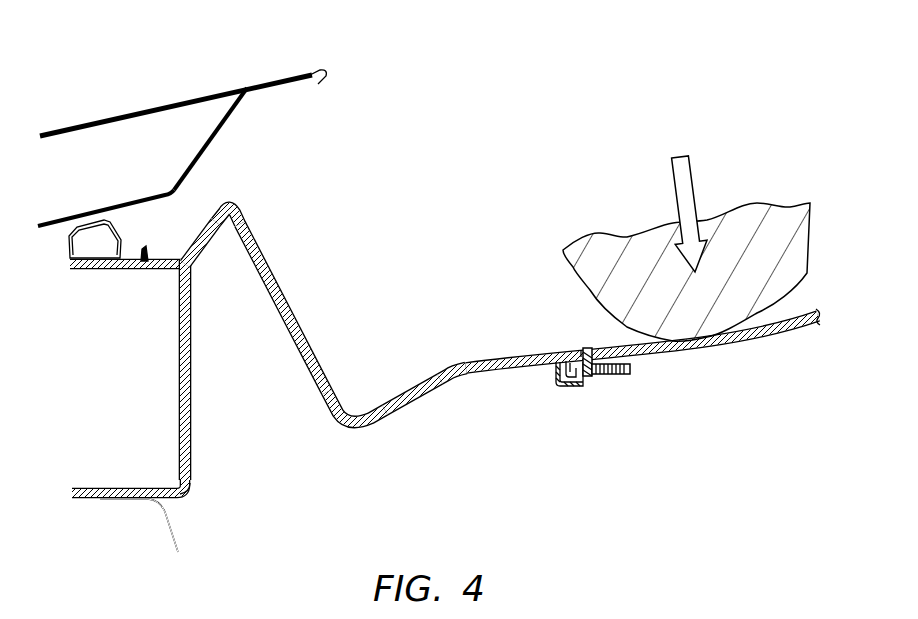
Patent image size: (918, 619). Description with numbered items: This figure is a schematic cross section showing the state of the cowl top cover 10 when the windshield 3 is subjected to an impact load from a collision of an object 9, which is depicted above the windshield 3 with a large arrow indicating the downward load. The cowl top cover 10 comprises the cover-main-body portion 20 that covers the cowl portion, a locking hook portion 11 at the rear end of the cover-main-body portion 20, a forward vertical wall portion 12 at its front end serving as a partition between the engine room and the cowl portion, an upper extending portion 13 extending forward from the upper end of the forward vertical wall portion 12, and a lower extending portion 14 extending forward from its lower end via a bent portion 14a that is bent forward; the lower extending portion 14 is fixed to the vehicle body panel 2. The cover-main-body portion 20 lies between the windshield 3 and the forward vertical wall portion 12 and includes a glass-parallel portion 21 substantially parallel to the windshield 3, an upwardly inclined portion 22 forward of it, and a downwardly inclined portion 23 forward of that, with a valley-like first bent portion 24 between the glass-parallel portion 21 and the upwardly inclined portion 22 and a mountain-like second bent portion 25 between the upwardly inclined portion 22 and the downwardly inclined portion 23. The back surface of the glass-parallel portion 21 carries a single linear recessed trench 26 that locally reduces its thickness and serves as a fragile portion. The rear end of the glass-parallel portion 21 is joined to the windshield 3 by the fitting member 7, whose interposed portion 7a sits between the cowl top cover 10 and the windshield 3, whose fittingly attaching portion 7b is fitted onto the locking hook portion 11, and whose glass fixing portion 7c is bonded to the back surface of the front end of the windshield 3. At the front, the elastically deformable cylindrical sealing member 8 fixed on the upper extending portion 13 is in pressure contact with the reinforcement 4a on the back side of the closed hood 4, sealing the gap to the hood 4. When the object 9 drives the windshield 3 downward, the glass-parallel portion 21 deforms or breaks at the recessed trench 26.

The vehicle body panel 2 is at (178, 526).
The windshield 3 is at (761, 356).
The hood 4 is at (187, 85).
The reinforcement 4a is at (231, 124).
The fitting member 7 is at (606, 416).
The interposed portion 7a is at (597, 376).
The fittingly attaching portion 7b is at (573, 390).
The glass fixing portion 7c is at (620, 406).
The sealing member 8 is at (60, 248).
The object 9 is at (597, 248).
The cowl top cover 10 is at (258, 341).
The locking hook portion 11 is at (581, 356).
The forward vertical wall portion 12 is at (193, 408).
The upper extending portion 13 is at (144, 268).
The lower extending portion 14 is at (84, 498).
The bent portion 14a is at (193, 494).
The cover-main-body portion 20 is at (329, 315).
The glass-parallel portion 21 is at (398, 408).
The upwardly inclined portion 22 is at (291, 313).
The downwardly inclined portion 23 is at (206, 247).
The first bent portion 24 is at (349, 413).
The second bent portion 25 is at (235, 203).
The recessed trench 26 is at (453, 385).